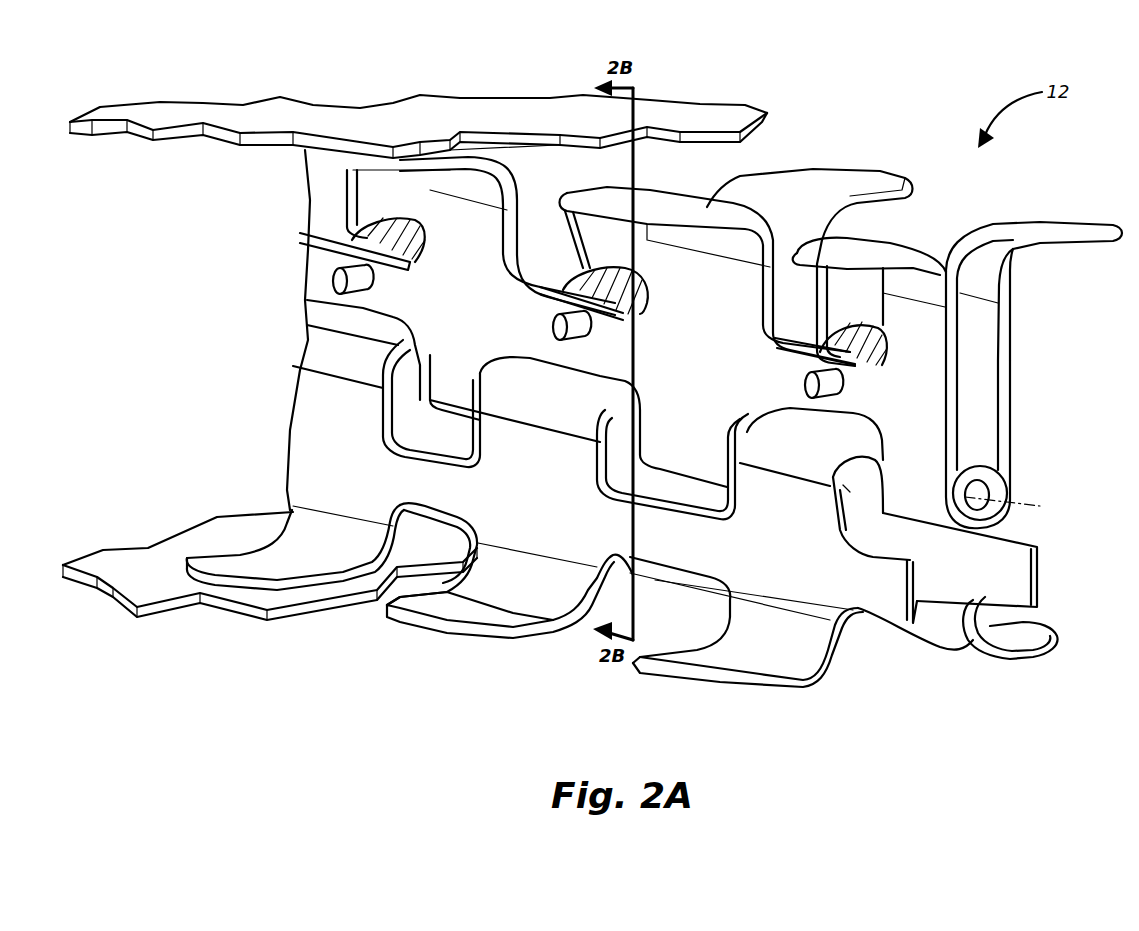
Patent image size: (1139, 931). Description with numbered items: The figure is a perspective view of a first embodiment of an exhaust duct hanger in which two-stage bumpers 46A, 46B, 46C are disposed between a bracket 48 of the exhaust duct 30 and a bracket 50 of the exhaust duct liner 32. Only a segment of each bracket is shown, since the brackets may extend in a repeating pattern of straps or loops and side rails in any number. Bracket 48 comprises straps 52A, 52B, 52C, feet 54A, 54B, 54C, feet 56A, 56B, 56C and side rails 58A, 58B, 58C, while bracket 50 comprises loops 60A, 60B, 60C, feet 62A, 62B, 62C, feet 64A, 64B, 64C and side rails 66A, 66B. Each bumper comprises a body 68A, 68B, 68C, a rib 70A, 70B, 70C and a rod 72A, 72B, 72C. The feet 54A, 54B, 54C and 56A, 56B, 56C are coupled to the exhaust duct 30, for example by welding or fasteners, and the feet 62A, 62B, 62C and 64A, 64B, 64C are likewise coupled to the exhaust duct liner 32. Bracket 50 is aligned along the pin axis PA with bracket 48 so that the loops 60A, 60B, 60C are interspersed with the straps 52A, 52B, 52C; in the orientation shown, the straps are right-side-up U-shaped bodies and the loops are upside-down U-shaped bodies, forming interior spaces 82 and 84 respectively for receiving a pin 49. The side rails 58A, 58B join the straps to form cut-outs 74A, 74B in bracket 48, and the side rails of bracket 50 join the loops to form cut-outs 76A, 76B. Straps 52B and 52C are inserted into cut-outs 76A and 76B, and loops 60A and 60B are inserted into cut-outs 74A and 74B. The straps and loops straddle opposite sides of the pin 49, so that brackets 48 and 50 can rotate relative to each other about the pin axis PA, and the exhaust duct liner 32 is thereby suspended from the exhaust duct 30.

The exhaust duct 30 is at (152, 108).
The exhaust duct liner 32 is at (110, 555).
The two-stage bumper 46A is at (873, 310).
The two-stage bumper 46B is at (623, 255).
The two-stage bumper 46C is at (412, 207).
The bracket 48 is at (1027, 358).
The pin 49 is at (987, 505).
The bracket 50 is at (1062, 560).
The strap 52A is at (940, 333).
The strap 52B is at (708, 286).
The strap 52C is at (397, 330).
The foot 54A is at (1042, 230).
The foot 54B is at (818, 178).
The foot 54C is at (548, 150).
The foot 56A is at (850, 252).
The foot 56B is at (652, 205).
The foot 56C is at (470, 157).
The side rail 58A is at (838, 412).
The side rail 58B is at (585, 363).
The side rail 58C is at (360, 300).
The loop 60A is at (754, 552).
The loop 60B is at (515, 483).
The loop 60C is at (343, 446).
The foot 62A is at (1023, 635).
The foot 62B is at (685, 578).
The foot 62C is at (405, 515).
The foot 64A is at (640, 670).
The foot 64B is at (395, 615).
The foot 64C is at (215, 560).
The side rail 66A is at (672, 477).
The side rail 66B is at (431, 414).
The body 68A is at (830, 350).
The body 68B is at (562, 290).
The body 68C is at (358, 240).
The rib 70A is at (880, 338).
The rib 70B is at (640, 287).
The rib 70C is at (425, 238).
The rod 72A is at (805, 386).
The rod 72B is at (555, 328).
The rod 72C is at (333, 280).
The cut-out 74A is at (872, 478).
The cut-out 74B is at (648, 430).
The cut-out 76A is at (720, 518).
The cut-out 76B is at (450, 450).
The interior space 82 is at (990, 455).
The interior space 84 is at (850, 480).
The pin axis PA is at (1032, 500).